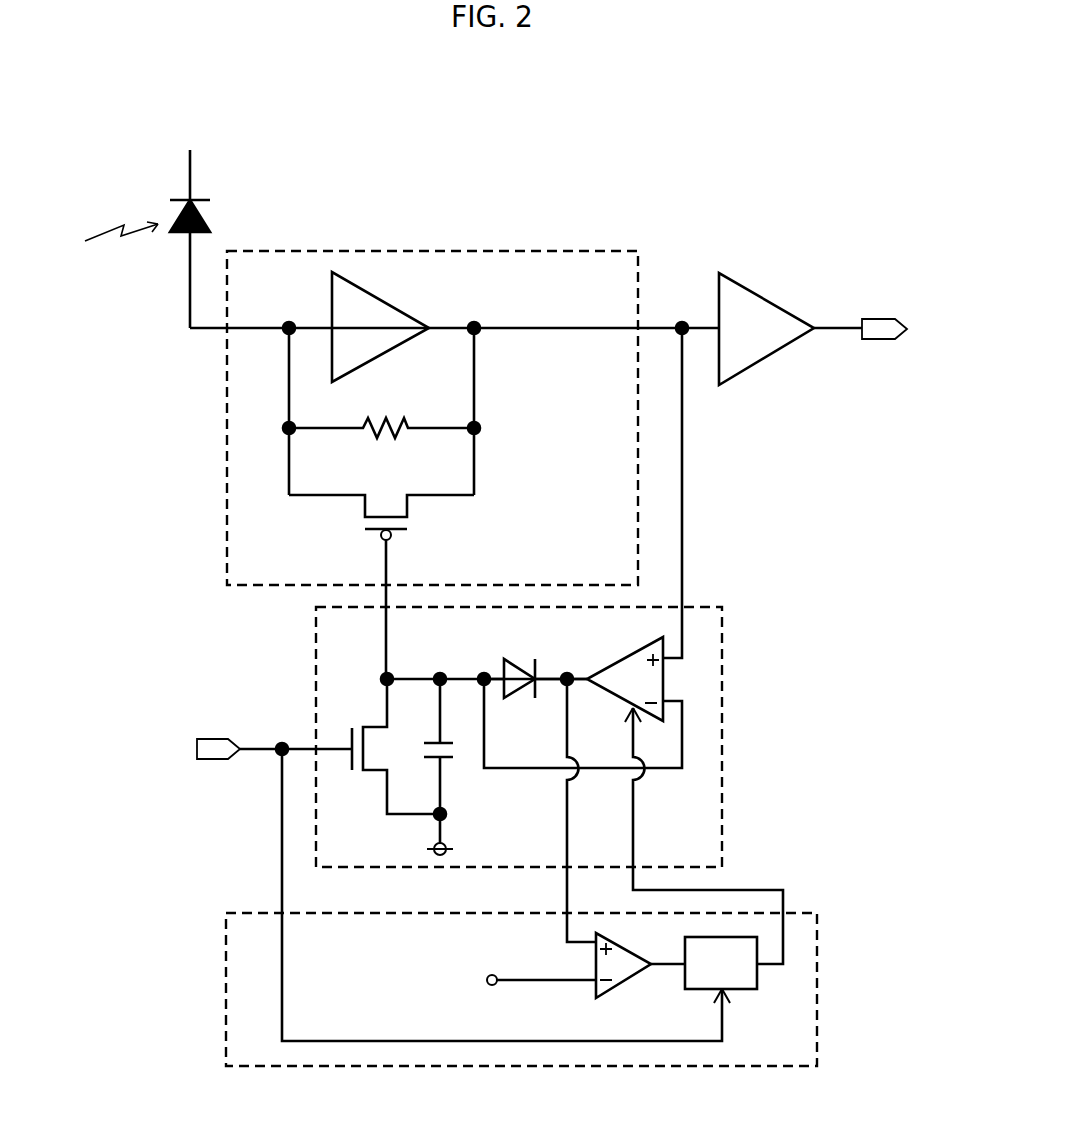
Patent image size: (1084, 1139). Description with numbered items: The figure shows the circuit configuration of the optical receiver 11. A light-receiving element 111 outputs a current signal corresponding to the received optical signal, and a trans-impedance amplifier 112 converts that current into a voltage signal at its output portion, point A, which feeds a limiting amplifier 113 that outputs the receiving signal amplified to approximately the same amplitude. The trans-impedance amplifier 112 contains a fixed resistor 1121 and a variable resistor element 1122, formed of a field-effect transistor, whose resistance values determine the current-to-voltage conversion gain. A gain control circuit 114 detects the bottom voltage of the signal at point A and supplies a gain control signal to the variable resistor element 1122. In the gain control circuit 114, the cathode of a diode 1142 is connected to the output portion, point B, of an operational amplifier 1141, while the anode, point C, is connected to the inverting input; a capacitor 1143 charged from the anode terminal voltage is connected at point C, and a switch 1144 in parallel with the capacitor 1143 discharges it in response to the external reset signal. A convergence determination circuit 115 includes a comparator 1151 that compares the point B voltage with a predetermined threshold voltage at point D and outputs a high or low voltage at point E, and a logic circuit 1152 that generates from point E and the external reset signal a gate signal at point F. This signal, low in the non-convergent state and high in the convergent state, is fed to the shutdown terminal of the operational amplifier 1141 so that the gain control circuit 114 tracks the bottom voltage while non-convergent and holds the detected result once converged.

The optical receiver 11 is at (692, 177).
The light-receiving element 111 is at (174, 222).
The trans-impedance amplifier 112 is at (495, 251).
The limiting amplifier 113 is at (728, 285).
The gain control circuit 114 is at (724, 657).
The convergence determination circuit 115 is at (818, 1020).
The fixed resistor 1121 is at (365, 423).
The variable resistor element 1122 is at (362, 503).
The operational amplifier 1141 is at (668, 683).
The diode 1142 is at (510, 700).
The capacitor 1143 is at (430, 758).
The switch 1144 is at (350, 730).
The comparator 1151 is at (610, 992).
The logic circuit 1152 is at (737, 990).
The point A is at (679, 321).
The point B is at (571, 675).
The point C is at (482, 675).
The point D is at (497, 975).
The point E is at (657, 968).
The point F is at (772, 887).